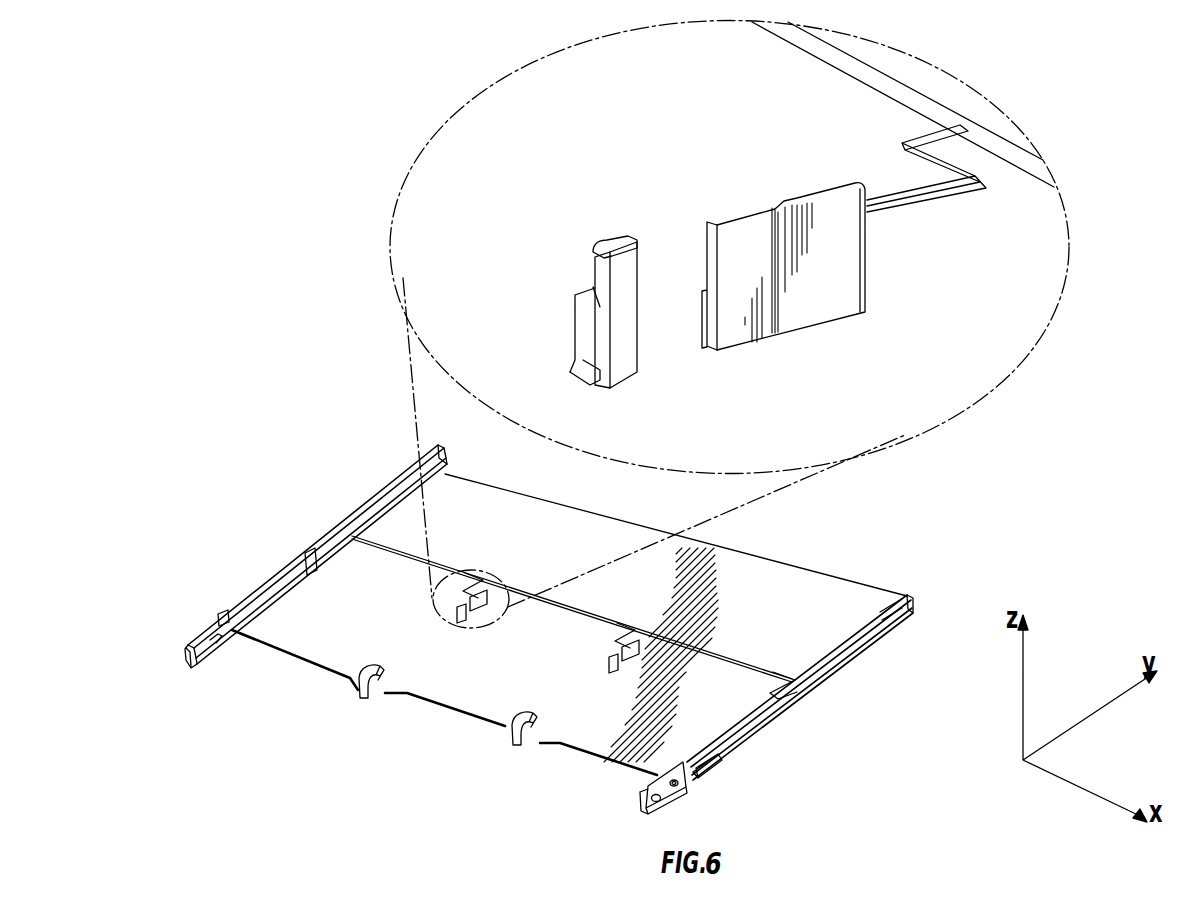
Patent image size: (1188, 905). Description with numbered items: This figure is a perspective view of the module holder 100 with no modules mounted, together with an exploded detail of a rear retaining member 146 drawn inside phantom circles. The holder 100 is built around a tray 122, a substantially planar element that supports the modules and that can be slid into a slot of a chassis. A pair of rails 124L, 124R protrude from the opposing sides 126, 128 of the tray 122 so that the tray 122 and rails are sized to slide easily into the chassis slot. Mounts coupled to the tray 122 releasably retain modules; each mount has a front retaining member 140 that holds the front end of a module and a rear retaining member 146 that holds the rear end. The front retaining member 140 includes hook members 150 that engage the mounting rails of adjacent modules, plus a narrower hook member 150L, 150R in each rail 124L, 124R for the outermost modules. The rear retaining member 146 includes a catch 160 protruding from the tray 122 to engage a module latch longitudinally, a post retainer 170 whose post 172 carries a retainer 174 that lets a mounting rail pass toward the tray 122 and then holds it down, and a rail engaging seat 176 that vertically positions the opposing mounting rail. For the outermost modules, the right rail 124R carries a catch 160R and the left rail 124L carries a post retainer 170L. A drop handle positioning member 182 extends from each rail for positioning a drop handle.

The module holder 100 is at (355, 469).
The tray 122 is at (585, 555).
The left rail 124L is at (262, 590).
The right rail 124R is at (763, 720).
The side of tray 126 is at (450, 498).
The side of tray 128 is at (827, 630).
The front retaining member 140 is at (238, 657).
The rear retaining member 146 is at (460, 627).
The hook member 150 is at (513, 740).
The left hook member 150L is at (226, 622).
The right hook member 150R is at (714, 762).
The catch 160 is at (793, 303).
The right rail catch 160R is at (793, 678).
The post retainer 170 is at (626, 352).
The left rail post retainer 170L is at (318, 542).
The post 172 is at (630, 302).
The retainer 174 is at (593, 250).
The rail engaging seat 176 is at (592, 294).
The drop handle positioning member 182 is at (205, 664).